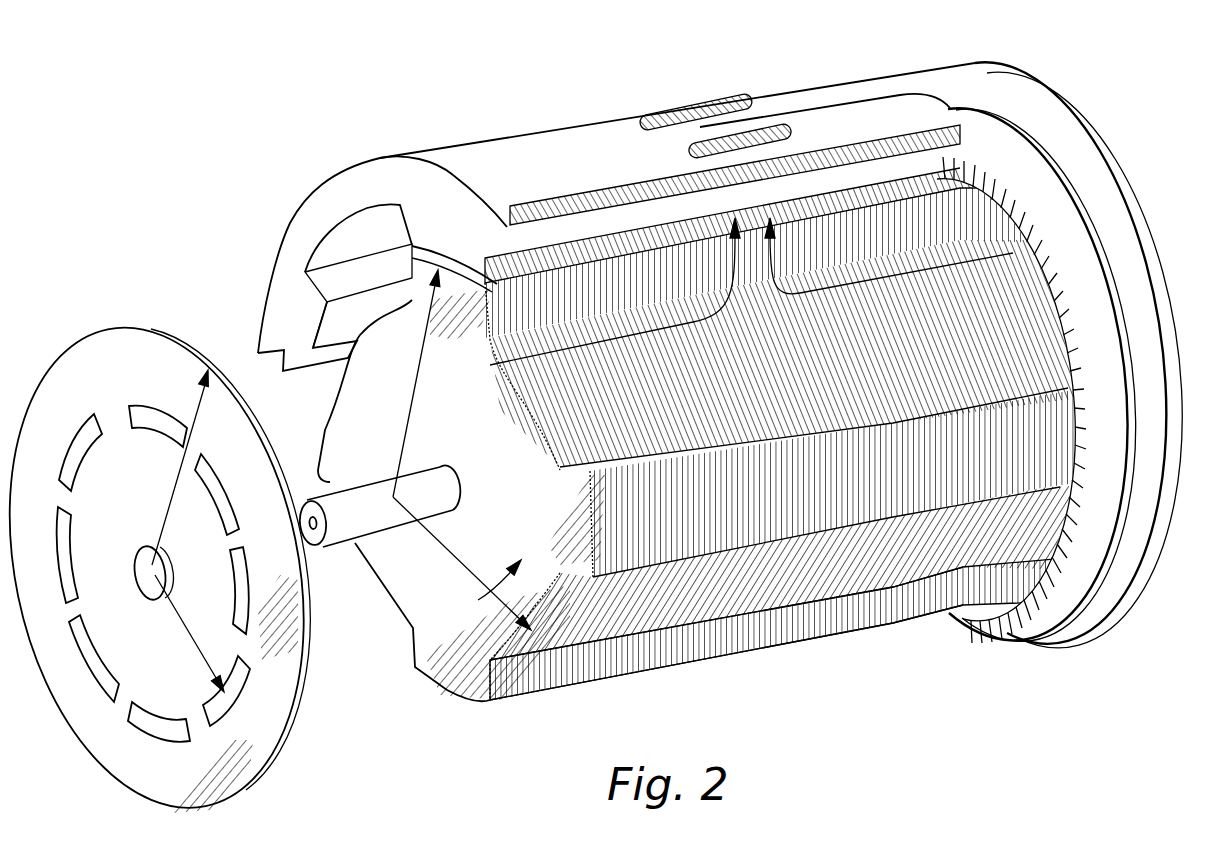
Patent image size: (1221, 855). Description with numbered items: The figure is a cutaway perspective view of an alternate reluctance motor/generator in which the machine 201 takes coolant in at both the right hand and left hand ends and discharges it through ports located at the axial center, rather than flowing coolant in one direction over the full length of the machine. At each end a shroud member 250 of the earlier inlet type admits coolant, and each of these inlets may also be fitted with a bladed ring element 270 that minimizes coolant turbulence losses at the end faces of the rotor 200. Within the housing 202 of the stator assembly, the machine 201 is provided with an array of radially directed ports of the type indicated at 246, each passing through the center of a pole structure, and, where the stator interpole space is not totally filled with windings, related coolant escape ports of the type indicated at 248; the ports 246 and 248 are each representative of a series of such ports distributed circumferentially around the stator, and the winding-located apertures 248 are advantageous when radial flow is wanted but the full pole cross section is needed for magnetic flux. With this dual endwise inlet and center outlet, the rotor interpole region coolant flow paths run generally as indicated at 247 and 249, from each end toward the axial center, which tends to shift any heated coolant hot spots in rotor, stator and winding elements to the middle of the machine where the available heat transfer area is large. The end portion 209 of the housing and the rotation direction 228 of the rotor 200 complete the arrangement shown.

The rotor 200 is at (694, 390).
The machine 201 is at (694, 364).
The housing 202 is at (618, 152).
The housing end portion 209 is at (239, 206).
The direction of rotation 228 is at (492, 580).
The radially directed port 246 is at (788, 128).
The rotor interpole region coolant flow path 247 is at (500, 382).
The coolant escape port 248 is at (744, 101).
The rotor interpole region coolant flow path 249 is at (990, 280).
The shroud member 250 is at (116, 332).
The bladed ring element 270 is at (994, 648).